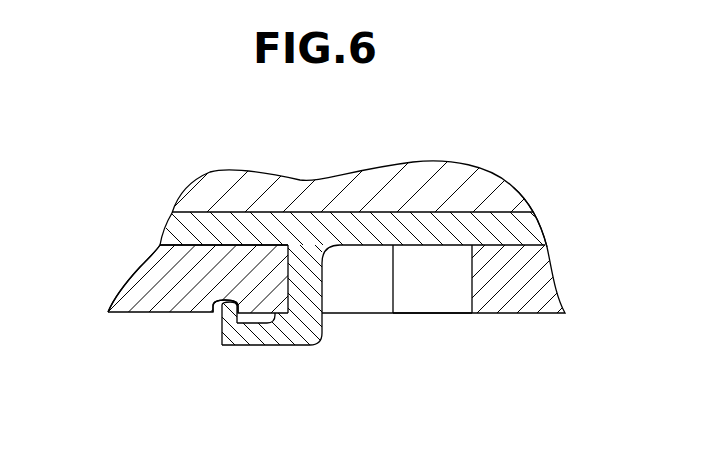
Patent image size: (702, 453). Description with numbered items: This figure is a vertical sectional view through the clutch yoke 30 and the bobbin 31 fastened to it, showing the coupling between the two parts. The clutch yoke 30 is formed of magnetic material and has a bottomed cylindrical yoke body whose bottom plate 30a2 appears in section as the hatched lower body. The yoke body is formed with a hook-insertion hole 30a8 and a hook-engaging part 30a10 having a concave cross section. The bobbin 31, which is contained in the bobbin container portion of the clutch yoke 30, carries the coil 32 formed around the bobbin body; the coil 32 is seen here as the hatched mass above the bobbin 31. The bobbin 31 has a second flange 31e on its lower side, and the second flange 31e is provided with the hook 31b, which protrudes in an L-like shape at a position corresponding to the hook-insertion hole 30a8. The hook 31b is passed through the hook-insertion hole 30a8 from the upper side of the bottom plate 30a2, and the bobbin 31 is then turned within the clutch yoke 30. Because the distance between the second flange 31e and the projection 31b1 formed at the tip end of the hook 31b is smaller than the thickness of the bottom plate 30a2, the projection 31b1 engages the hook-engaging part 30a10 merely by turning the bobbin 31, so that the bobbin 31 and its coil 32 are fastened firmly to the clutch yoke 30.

The clutch yoke 30 is at (152, 313).
The bottom plate 30a2 is at (163, 278).
The hook-insertion hole 30a8 is at (440, 293).
The hook-engaging part 30a10 is at (223, 298).
The bobbin 31 is at (422, 212).
The hook 31b is at (282, 345).
The projection 31b1 is at (228, 347).
The second flange 31e is at (505, 220).
The coil 32 is at (343, 190).